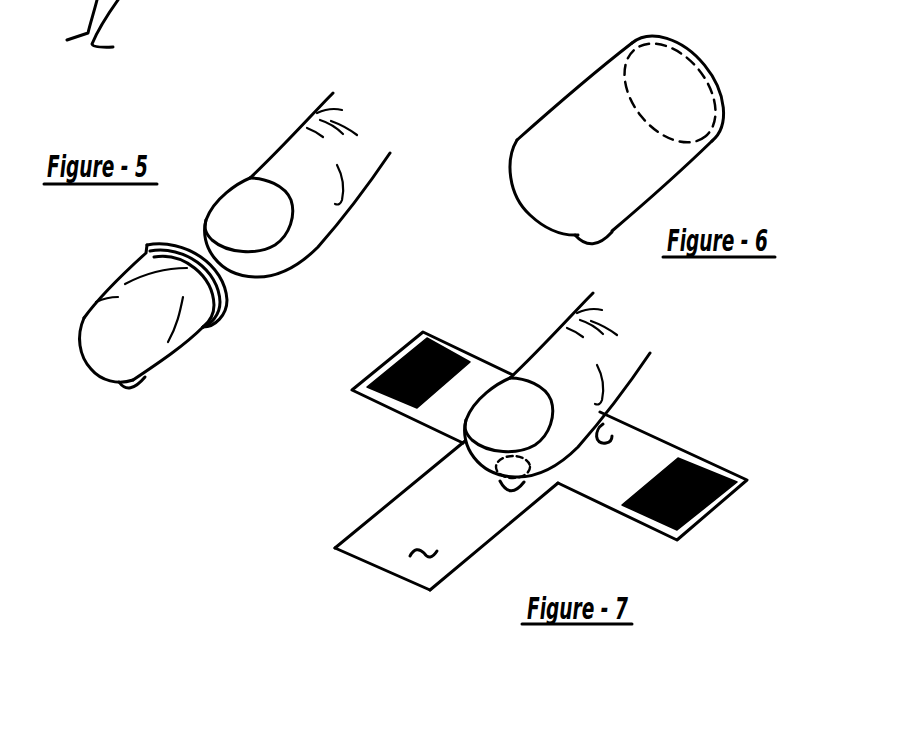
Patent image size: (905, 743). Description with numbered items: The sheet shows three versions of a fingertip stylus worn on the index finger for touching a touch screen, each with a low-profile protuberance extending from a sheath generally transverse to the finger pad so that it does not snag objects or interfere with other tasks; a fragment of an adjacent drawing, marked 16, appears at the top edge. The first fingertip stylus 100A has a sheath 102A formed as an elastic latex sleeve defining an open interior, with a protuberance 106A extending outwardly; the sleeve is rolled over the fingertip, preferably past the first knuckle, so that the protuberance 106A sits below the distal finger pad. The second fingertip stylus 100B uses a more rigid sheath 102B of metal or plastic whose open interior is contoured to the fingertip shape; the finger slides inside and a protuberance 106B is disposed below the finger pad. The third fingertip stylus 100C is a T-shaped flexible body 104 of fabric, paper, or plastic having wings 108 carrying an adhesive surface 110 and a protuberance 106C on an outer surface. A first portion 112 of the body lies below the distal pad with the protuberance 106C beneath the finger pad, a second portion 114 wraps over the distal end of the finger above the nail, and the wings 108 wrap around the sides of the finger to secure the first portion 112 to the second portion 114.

In FIG. 5, the housing 16 is at (323, 2).
In FIG. 5, the fingertip stylus 100A is at (87, 265).
In FIG. 5, the sheath 102A is at (115, 348).
In FIG. 5, the protuberance 106A is at (137, 386).
In FIG. 6, the fingertip stylus 100B is at (560, 78).
In FIG. 6, the sheath 102B is at (558, 181).
In FIG. 6, the protuberance 106B is at (617, 248).
In FIG. 7, the fingertip stylus 100C is at (767, 430).
In FIG. 7, the flexible body 104 is at (398, 518).
In FIG. 7, the wings 108 is at (440, 417).
In FIG. 7, the adhesive surface 110 is at (410, 358).
In FIG. 7, the first portion 112 is at (600, 416).
In FIG. 7, the second portion 114 is at (427, 550).
In FIG. 7, the protuberance 106C is at (513, 494).